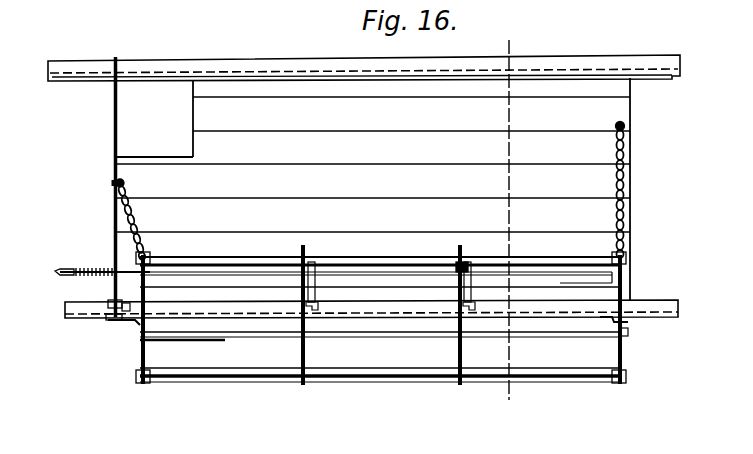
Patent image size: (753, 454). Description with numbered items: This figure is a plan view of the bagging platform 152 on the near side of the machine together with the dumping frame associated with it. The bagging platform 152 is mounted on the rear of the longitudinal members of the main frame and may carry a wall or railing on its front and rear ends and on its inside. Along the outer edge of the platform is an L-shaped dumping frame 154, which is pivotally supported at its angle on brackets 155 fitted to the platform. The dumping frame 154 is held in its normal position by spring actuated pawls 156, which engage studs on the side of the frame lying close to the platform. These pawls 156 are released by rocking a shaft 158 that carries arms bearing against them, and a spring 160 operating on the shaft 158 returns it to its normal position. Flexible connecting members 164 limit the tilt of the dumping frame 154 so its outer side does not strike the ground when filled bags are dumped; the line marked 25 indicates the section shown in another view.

The section line 25 is at (513, 221).
The bagging platform 152 is at (373, 189).
The L-shaped dumping frame 154 is at (300, 366).
The brackets 155 is at (125, 325).
The spring actuated pawls 156 is at (306, 259).
The shaft 158 is at (60, 270).
The spring 160 is at (97, 268).
The flexible connecting members 164 is at (136, 218).